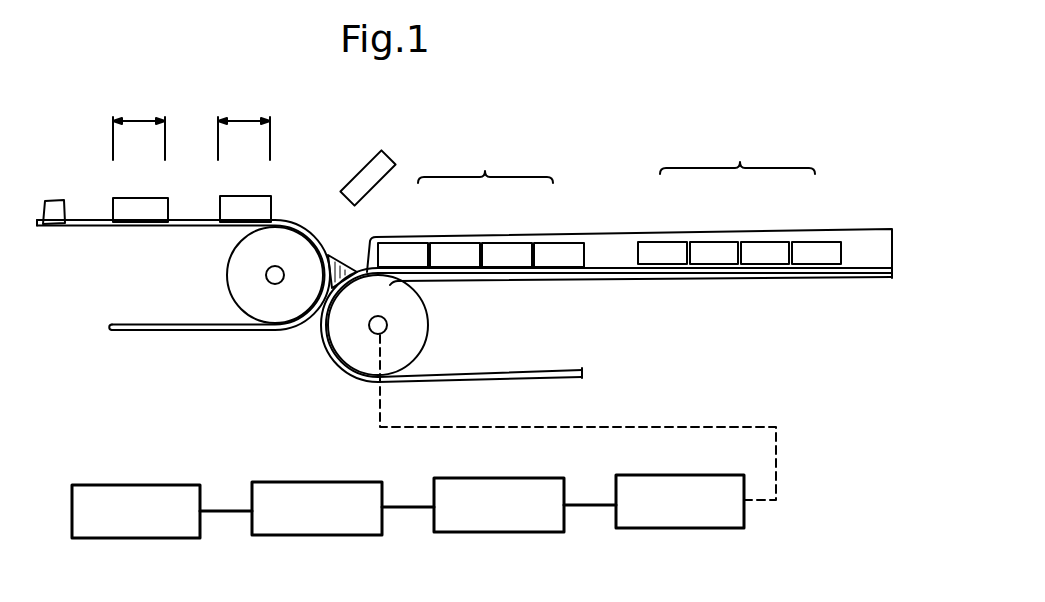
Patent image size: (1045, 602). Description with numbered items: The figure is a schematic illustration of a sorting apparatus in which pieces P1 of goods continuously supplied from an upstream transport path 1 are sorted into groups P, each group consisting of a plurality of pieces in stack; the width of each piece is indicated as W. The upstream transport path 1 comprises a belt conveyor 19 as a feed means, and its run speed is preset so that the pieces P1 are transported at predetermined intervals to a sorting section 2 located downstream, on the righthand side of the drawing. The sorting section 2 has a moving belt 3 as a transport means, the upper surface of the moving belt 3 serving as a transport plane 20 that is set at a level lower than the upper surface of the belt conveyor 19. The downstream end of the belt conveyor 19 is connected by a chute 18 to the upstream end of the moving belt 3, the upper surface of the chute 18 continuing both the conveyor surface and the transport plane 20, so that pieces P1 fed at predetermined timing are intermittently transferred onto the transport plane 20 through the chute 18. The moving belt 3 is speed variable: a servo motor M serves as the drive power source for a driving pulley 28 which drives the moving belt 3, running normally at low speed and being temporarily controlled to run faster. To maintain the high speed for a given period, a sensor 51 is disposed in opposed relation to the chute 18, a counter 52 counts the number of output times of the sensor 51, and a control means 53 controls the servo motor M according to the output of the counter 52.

The upstream transport path 1 is at (91, 181).
The belt conveyor 19 is at (140, 230).
The piece of goods P1 is at (143, 197).
The group of pieces P is at (616, 158).
The article width W is at (191, 127).
The chute 18 is at (338, 252).
The driving pulley 28 is at (348, 352).
The sorting section 2 is at (576, 186).
The transport plane 20 is at (614, 250).
The moving belt 3 is at (498, 273).
The sensor 51 is at (390, 158).
The counter 52 is at (335, 537).
The control means 53 is at (517, 533).
The servo motor M is at (688, 529).